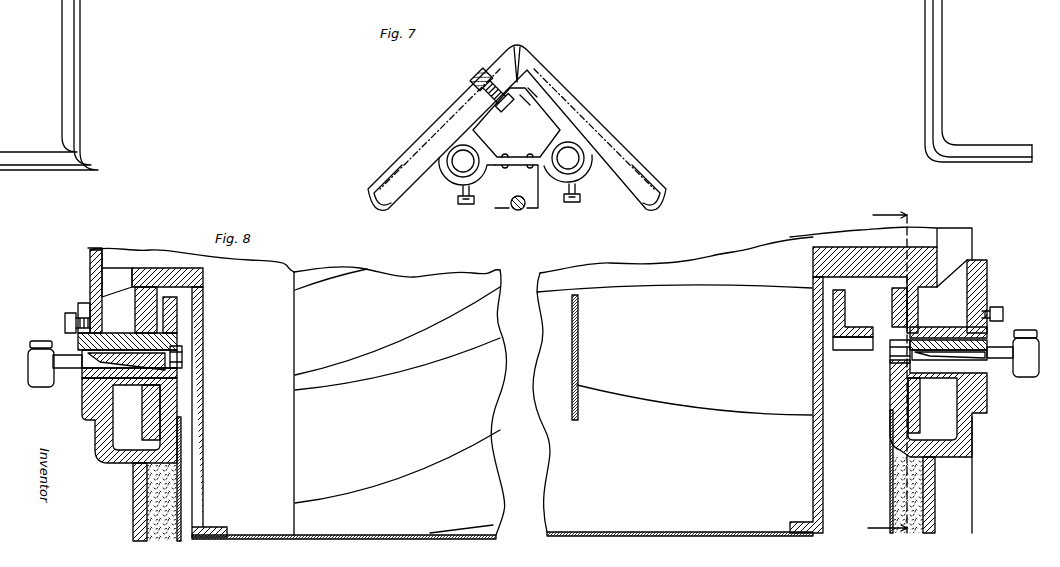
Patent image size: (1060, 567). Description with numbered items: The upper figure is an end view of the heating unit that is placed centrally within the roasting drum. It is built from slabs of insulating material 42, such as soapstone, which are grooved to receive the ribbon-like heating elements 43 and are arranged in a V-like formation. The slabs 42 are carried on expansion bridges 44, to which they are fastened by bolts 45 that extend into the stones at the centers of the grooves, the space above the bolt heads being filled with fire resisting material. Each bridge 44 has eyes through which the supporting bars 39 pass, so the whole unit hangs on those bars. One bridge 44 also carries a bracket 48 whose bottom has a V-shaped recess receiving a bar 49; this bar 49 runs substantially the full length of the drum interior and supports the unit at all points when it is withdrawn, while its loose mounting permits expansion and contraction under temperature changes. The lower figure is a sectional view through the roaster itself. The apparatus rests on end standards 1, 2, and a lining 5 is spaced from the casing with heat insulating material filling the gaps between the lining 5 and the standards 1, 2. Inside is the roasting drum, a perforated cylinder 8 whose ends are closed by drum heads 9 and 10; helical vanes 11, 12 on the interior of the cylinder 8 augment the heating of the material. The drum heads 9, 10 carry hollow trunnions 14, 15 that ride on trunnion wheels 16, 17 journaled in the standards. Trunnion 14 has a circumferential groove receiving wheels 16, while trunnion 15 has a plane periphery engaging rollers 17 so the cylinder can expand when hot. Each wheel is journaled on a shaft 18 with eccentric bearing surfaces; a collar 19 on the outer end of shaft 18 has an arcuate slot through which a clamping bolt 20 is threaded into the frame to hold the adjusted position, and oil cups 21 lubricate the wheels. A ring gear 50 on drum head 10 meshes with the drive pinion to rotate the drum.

In FIG. 8, the end standard 1 is at (133, 512).
In FIG. 8, the end standard 2 is at (972, 486).
In FIG. 8, the lining 5 is at (183, 510).
In FIG. 8, the perforated cylinder 8 is at (660, 534).
In FIG. 8, the drum head 9 is at (203, 446).
In FIG. 8, the drum head 10 is at (813, 468).
In FIG. 8, the helical vane 11 is at (397, 373).
In FIG. 8, the helical vane 12 is at (579, 410).
In FIG. 8, the trunnion 14 is at (165, 268).
In FIG. 8, the trunnion 15 is at (848, 247).
In FIG. 8, the trunnion wheel 16 is at (142, 416).
In FIG. 8, the trunnion wheel 17 is at (928, 431).
In FIG. 8, the shaft 18 is at (893, 359).
In FIG. 8, the collar 19 is at (80, 308).
In FIG. 8, the clamping bolt 20 is at (66, 318).
In FIG. 8, the oil cup 21 is at (39, 342).
In FIG. 7, the supporting bar 39 is at (548, 153).
In FIG. 7, the insulating slab 42 is at (405, 158).
In FIG. 7, the heating element 43 is at (368, 195).
In FIG. 7, the expansion bridge 44 is at (447, 180).
In FIG. 7, the bolt 45 is at (470, 81).
In FIG. 7, the bracket 48 is at (497, 198).
In FIG. 7, the bar 49 is at (518, 210).
In FIG. 8, the ring gear 50 is at (850, 347).